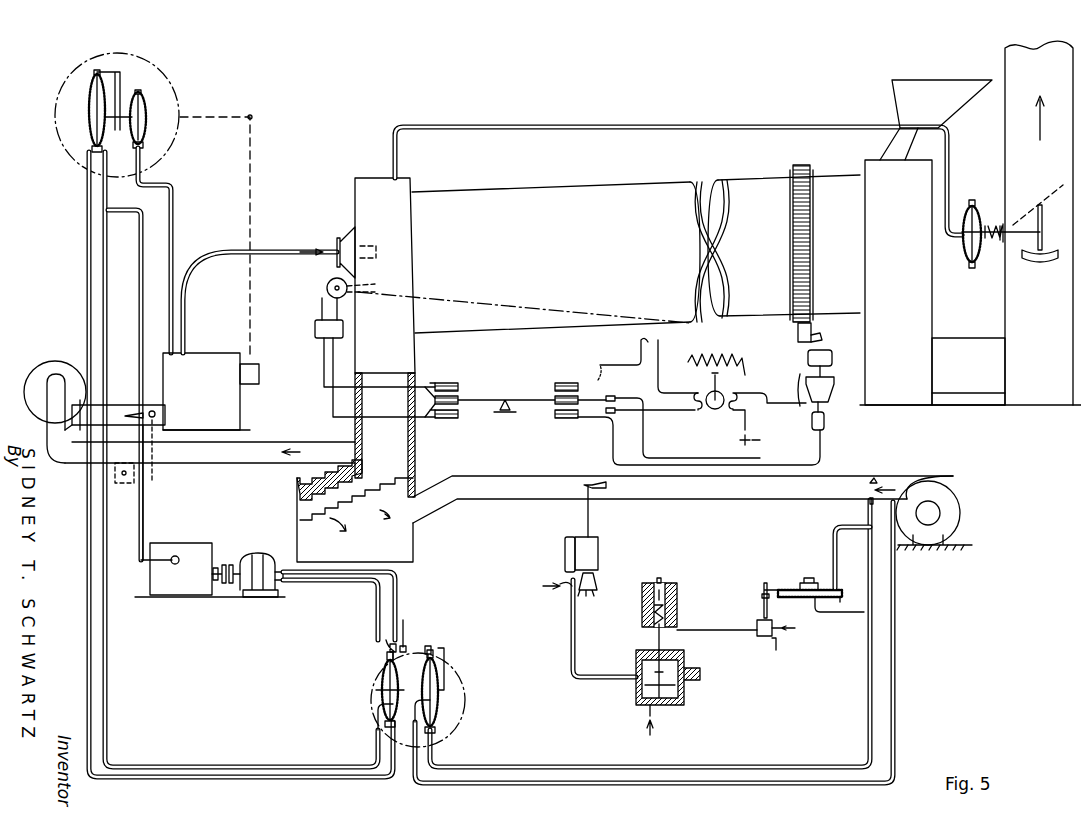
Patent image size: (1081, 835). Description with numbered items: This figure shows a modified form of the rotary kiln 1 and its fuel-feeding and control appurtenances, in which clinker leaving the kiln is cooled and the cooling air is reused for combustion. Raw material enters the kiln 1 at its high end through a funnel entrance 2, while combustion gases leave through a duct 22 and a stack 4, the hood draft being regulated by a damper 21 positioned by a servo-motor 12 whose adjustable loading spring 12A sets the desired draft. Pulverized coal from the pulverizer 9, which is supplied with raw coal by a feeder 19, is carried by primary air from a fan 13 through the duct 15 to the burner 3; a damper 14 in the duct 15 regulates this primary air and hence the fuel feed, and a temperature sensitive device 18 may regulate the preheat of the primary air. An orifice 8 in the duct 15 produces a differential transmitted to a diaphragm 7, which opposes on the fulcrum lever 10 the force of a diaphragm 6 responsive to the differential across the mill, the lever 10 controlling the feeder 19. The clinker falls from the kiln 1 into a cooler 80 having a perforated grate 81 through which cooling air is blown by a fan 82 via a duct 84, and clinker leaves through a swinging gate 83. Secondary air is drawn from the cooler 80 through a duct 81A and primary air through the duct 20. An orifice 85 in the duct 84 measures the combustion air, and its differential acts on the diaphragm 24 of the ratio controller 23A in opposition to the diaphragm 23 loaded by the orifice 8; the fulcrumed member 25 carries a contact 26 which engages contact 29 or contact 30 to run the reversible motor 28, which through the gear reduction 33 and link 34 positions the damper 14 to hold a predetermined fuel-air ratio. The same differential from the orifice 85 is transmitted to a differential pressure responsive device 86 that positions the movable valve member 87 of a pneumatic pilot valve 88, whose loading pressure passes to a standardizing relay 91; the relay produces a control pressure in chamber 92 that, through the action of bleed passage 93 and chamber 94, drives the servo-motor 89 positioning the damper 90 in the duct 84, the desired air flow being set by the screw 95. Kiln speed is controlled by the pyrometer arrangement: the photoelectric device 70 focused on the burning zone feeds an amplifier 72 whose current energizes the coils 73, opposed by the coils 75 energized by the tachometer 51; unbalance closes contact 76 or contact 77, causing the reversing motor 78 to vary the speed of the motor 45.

The rotary kiln 1 is at (592, 183).
The funnel entrance 2 is at (893, 98).
The burner 3 is at (345, 238).
The stack 4 is at (1005, 62).
The pressure sensitive diaphragm 6 is at (145, 106).
The pressure sensitive diaphragm 7 is at (92, 100).
The orifice 8 is at (103, 412).
The pulverizer 9 is at (218, 358).
The fulcrum lever 10 is at (120, 82).
The servo-motor 12 is at (985, 205).
The adjustable loading spring 12A is at (990, 262).
The fan 13 is at (38, 365).
The damper 14 is at (136, 410).
The duct 15 is at (152, 403).
The temperature sensitive device 18 is at (160, 412).
The feeder 19 is at (250, 395).
The duct 20 is at (290, 440).
The damper 21 is at (1048, 190).
The duct 22 is at (960, 338).
The diaphragm 23 is at (372, 685).
The ratio controller 23A is at (470, 672).
The diaphragm 24 is at (440, 698).
The fulcrumed lever 25 is at (440, 646).
The contact 26 is at (396, 622).
The reversible motor 28 is at (270, 552).
The contact 29 is at (388, 640).
The contact 30 is at (420, 633).
The gear reduction 33 is at (172, 540).
The link 34 is at (140, 560).
The motor 45 is at (830, 385).
The tachometer 51 is at (824, 420).
The photoelectric device 70 is at (328, 284).
The amplifier 72 is at (313, 326).
The coils 73 is at (428, 400).
The coils 75 is at (585, 398).
The contact 76 is at (612, 398).
The contact 77 is at (618, 412).
The reversing motor 78 is at (700, 448).
The cooler 80 is at (330, 498).
The perforated shaking or traveling grate 81 is at (318, 528).
The duct 81A is at (418, 378).
The fan 82 is at (960, 500).
The swinging gate 83 is at (295, 495).
The duct 84 is at (703, 503).
The orifice 85 is at (876, 478).
The differential pressure responsive device 86 is at (833, 578).
The movable valve member 87 is at (758, 612).
The pneumatic pilot valve 88 is at (772, 640).
The servo-motor 89 is at (600, 560).
The damper 90 is at (606, 476).
The standardizing relay 91 is at (642, 616).
The chamber 92 is at (690, 690).
The bleed passage 93 is at (700, 665).
The chamber 94 is at (632, 666).
The screw 95 is at (662, 583).